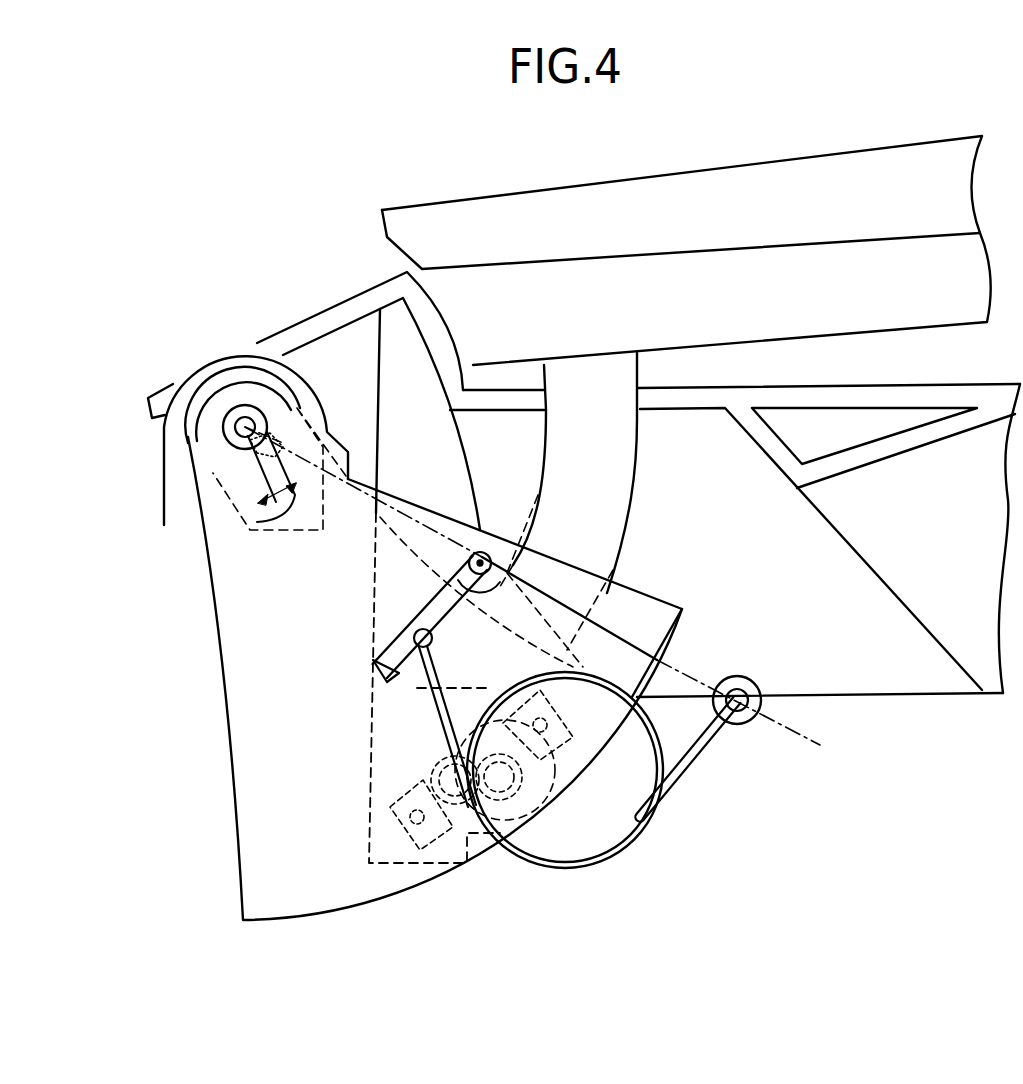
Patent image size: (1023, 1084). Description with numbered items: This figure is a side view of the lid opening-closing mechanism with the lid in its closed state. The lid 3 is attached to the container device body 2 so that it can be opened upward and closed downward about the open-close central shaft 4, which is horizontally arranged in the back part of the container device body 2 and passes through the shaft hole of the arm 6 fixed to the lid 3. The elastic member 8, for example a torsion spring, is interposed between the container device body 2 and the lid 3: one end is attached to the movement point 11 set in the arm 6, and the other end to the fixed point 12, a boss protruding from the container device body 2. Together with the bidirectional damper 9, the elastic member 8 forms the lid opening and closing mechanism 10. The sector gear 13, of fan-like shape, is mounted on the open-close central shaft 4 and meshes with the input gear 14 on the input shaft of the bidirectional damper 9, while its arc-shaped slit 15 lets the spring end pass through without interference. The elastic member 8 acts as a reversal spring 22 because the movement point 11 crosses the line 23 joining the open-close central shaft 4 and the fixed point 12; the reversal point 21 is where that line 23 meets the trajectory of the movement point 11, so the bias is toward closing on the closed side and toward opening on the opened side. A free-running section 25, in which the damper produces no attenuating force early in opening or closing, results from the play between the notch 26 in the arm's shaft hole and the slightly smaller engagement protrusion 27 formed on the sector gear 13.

The container device body 2 is at (960, 697).
The lid 3 is at (488, 210).
The open-close central shaft 4 is at (245, 427).
The arm 6 is at (598, 385).
The elastic member 8 is at (583, 797).
The bidirectional damper 9 is at (470, 823).
The lid opening and closing mechanism 10 is at (537, 870).
The movement point 11 is at (400, 673).
The fixed point 12 is at (745, 724).
The sector gear 13 is at (275, 898).
The input gear 14 is at (510, 820).
The slit 15 is at (373, 678).
The reversal point 21 is at (468, 563).
The reversal spring 22 is at (641, 818).
The line 23 is at (810, 742).
The free-running section 25 is at (257, 522).
The notch 26 is at (250, 463).
The engagement protrusion 27 is at (257, 453).